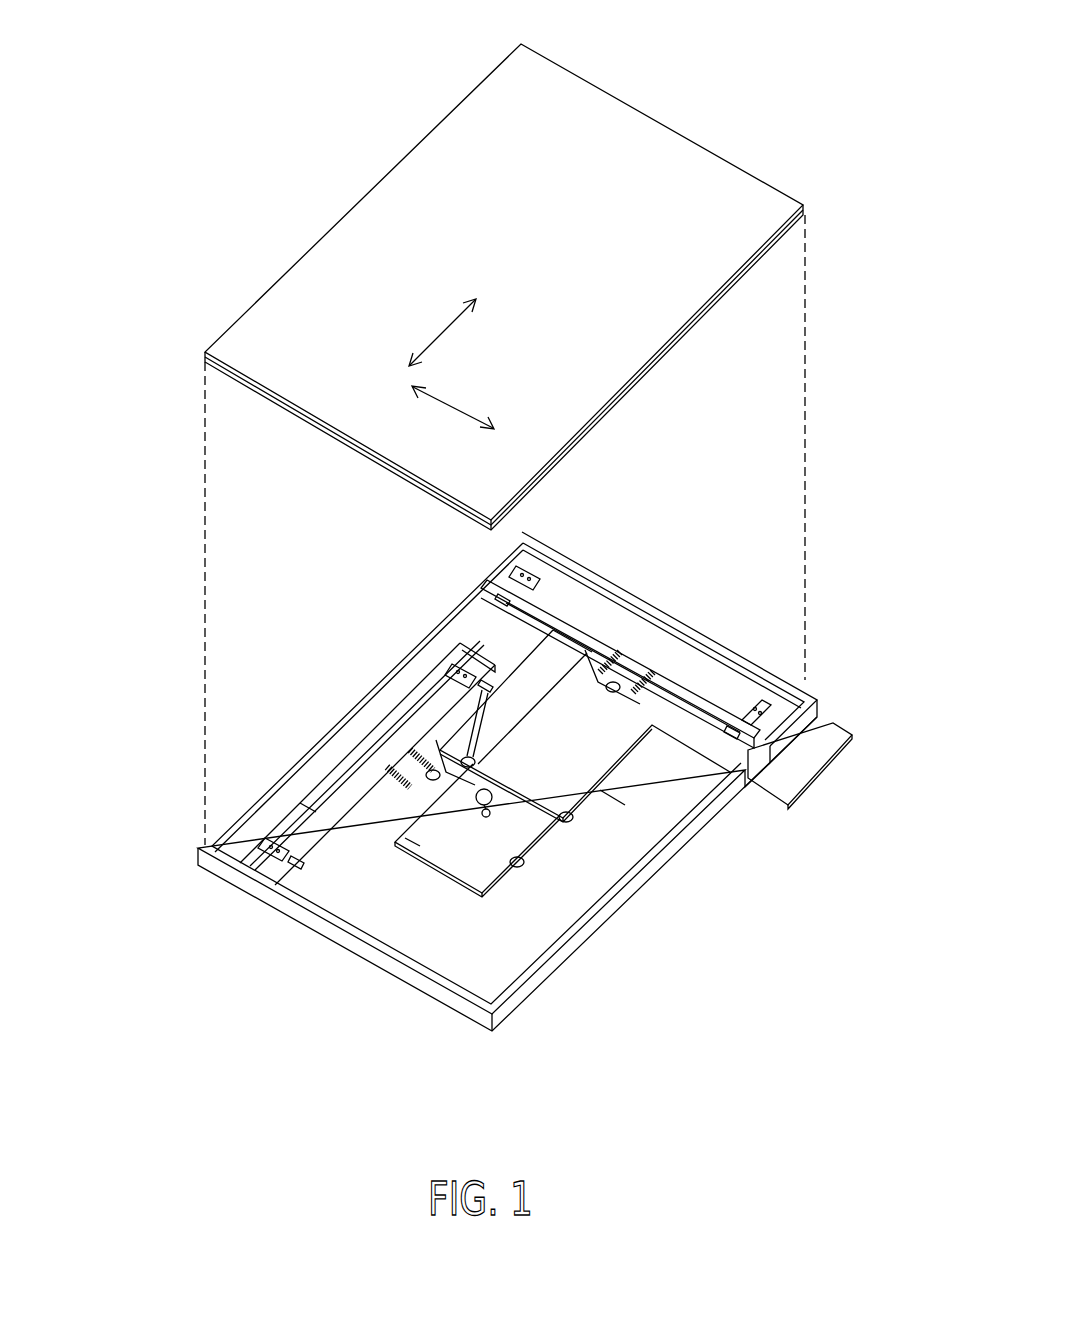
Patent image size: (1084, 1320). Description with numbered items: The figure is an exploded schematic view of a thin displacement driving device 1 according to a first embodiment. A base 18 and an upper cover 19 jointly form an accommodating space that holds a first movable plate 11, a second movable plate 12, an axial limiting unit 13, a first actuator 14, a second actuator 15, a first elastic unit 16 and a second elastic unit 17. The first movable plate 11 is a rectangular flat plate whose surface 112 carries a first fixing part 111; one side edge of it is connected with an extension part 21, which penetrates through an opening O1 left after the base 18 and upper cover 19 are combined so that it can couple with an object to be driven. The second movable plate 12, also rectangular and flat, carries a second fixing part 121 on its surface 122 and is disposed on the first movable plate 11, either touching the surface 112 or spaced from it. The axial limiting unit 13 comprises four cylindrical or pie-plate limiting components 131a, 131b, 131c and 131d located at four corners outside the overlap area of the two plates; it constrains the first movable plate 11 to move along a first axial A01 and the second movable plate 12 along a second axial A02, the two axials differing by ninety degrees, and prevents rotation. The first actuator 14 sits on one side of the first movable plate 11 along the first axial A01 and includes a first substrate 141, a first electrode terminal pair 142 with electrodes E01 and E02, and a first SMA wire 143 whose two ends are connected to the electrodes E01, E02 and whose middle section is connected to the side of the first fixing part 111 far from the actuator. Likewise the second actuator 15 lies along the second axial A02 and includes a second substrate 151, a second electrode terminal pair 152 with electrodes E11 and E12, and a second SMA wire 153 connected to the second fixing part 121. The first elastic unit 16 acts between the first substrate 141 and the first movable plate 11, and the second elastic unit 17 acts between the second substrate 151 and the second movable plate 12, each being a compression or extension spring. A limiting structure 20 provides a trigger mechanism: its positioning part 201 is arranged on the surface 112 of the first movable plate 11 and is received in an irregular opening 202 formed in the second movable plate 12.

The thin displacement driving device 1 is at (226, 90).
The upper cover 19 is at (360, 225).
The first axial A01 is at (439, 332).
The second axial A02 is at (454, 405).
The base 18 is at (522, 990).
The opening O1 is at (778, 757).
The first movable plate 11 is at (585, 772).
The surface 112 is at (605, 800).
The extension part 21 is at (813, 776).
The second movable plate 12 is at (563, 852).
The surface 122 is at (412, 848).
The axial limiting unit 13 is at (882, 1120).
The limiting component 131a is at (463, 757).
The limiting component 131b is at (572, 818).
The limiting component 131c is at (308, 808).
The limiting component 131d is at (517, 872).
The limiting structure 20 is at (727, 1115).
The positioning part 201 is at (490, 813).
The irregular opening 202 is at (492, 794).
The second elastic unit 17 is at (410, 757).
The second fixing part 121 is at (426, 770).
The first fixing part 111 is at (625, 672).
The first elastic unit 16 is at (697, 652).
The first actuator 14 is at (882, 520).
The first substrate 141 is at (562, 584).
The first electrode terminal pair 142 is at (875, 615).
The first SMA wire 143 is at (608, 643).
The electrode E01 is at (513, 593).
The electrode E02 is at (768, 712).
The second actuator 15 is at (242, 1118).
The second substrate 151 is at (300, 806).
The second electrode terminal pair 152 is at (115, 1108).
The second SMA wire 153 is at (348, 870).
The electrode E11 is at (277, 860).
The electrode E12 is at (452, 672).